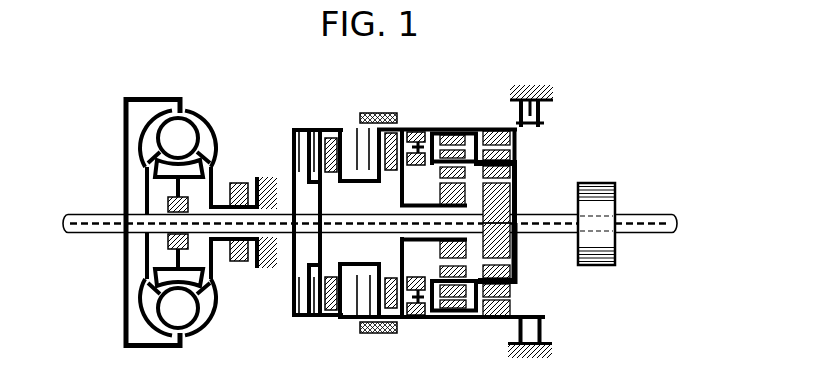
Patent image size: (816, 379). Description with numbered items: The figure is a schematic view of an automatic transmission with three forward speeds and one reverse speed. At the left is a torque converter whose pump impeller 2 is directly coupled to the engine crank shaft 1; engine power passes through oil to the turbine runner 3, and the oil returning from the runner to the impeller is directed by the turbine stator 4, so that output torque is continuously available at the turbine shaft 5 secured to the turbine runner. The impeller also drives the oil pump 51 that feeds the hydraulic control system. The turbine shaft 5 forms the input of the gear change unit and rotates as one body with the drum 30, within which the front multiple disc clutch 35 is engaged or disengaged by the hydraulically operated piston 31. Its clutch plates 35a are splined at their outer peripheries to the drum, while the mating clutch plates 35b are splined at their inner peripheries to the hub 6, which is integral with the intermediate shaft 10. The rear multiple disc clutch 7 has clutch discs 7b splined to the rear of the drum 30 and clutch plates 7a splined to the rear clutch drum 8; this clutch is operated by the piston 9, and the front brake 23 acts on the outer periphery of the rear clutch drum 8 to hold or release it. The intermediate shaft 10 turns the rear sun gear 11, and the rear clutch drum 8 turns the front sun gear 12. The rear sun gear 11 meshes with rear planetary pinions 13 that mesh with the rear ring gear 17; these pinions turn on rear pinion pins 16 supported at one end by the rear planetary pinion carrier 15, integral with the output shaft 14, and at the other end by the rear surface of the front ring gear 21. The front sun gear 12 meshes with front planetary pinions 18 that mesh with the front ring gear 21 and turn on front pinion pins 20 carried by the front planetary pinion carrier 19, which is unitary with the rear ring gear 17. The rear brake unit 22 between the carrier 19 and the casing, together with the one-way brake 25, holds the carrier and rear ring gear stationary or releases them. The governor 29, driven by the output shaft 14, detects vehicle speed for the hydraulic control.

The engine crank shaft 1 is at (86, 236).
The pump impeller 2 is at (204, 121).
The turbine runner 3 is at (153, 223).
The turbine stator 4 is at (170, 174).
The turbine shaft 5 is at (166, 234).
The oil pump 51 is at (238, 263).
The drum 30 is at (290, 128).
The multiple disc clutch 35 is at (303, 130).
The clutch plates 35a is at (298, 297).
The clutch plates 35b is at (318, 313).
The hub 6 is at (312, 263).
The hydraulically operated piston 31 is at (328, 139).
The multiple disc clutch 7 is at (380, 127).
The clutch plates 7a is at (372, 180).
The clutch discs 7b is at (356, 180).
The rear clutch drum 8 is at (372, 118).
The brake 23 is at (378, 334).
The hydraulically operated piston 9 is at (391, 137).
The intermediate shaft 10 is at (362, 231).
The front planetary pinions 18 is at (438, 172).
The rear ring gear 17 is at (514, 137).
The one-way brake 25 is at (417, 132).
The front ring gear 21 is at (453, 136).
The front sun gear 12 is at (437, 251).
The front pinion pins 20 is at (473, 158).
The front planetary pinion carrier 19 is at (491, 131).
The rear sun gear 11 is at (503, 244).
The rear planetary pinions 13 is at (511, 164).
The rear pinion pins 16 is at (515, 179).
The rear planetary pinion carrier 15 is at (516, 264).
The output shaft 14 is at (568, 241).
The brake unit 22 is at (542, 113).
The governor 29 is at (595, 184).